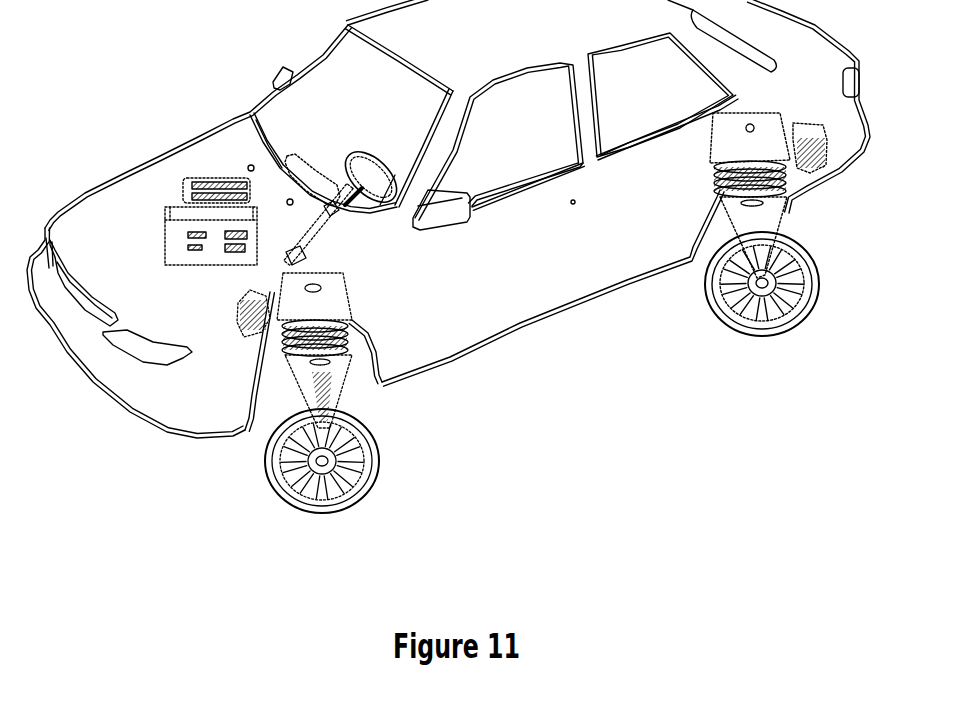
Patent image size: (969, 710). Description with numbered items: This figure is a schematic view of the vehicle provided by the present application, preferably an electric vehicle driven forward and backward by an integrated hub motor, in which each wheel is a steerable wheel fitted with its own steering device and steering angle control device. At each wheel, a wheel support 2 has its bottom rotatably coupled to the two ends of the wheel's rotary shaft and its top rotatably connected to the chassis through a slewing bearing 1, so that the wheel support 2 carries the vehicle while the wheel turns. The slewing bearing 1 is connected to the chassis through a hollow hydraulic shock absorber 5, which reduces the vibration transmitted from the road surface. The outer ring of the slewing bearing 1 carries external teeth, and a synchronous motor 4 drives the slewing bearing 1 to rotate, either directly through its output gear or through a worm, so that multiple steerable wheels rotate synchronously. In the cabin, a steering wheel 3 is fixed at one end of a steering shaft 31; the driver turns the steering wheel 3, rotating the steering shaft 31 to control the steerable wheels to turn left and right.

The slewing bearing 1 is at (415, 409).
The wheel support 2 is at (388, 456).
The steering wheel 3 is at (498, 276).
The steering shaft 31 is at (427, 311).
The synchronous motor 4 is at (171, 420).
The hollow hydraulic shock absorber 5 is at (258, 412).